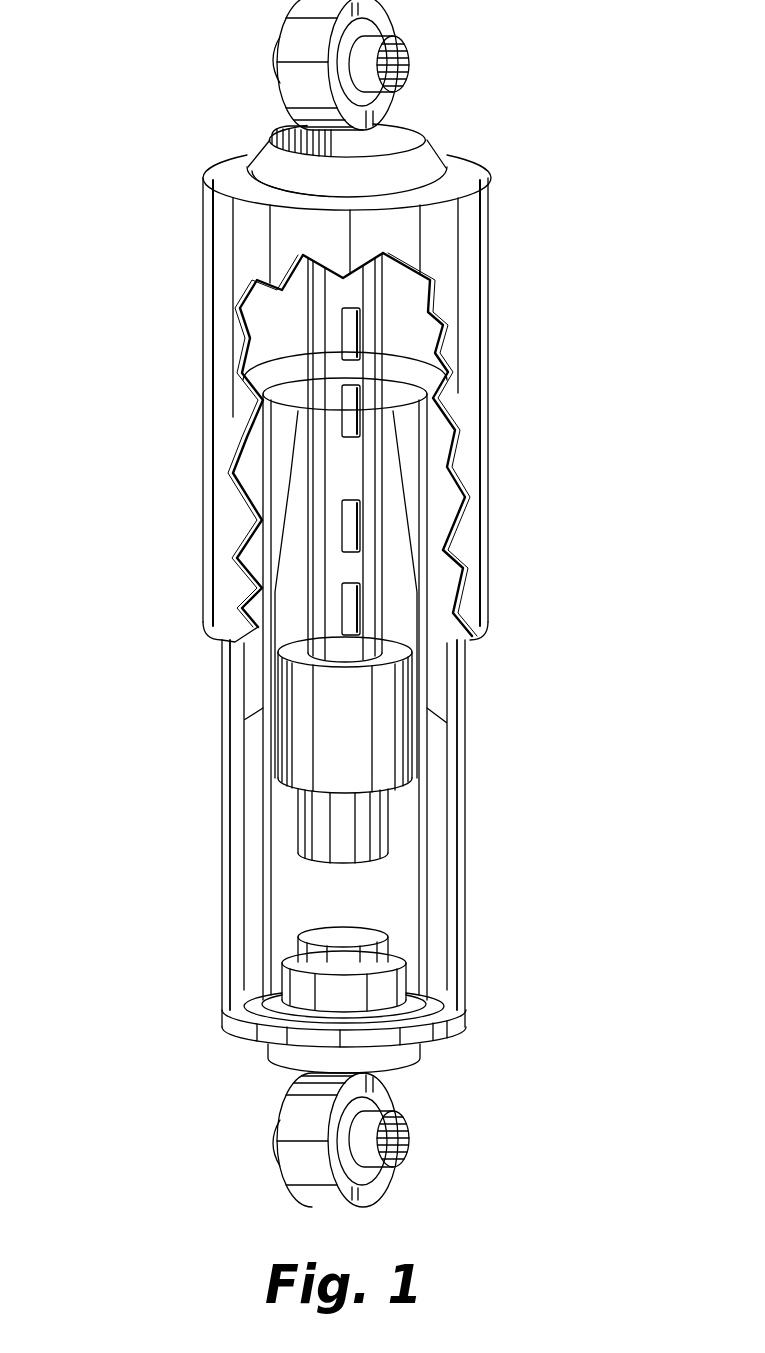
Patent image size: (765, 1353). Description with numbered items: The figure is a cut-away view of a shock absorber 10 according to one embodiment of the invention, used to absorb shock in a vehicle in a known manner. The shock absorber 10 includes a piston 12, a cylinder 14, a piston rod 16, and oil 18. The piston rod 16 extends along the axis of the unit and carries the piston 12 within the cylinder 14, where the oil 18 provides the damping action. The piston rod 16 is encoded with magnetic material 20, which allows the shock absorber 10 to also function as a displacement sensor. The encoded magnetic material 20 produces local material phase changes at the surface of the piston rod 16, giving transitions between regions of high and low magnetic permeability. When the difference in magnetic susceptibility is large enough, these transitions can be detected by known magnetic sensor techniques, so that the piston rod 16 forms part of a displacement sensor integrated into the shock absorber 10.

The shock absorber 10 is at (185, 437).
The piston 12 is at (322, 738).
The cylinder 14 is at (402, 398).
The piston rod 16 is at (350, 470).
The oil 18 is at (385, 905).
The magnetic material 20 is at (352, 603).